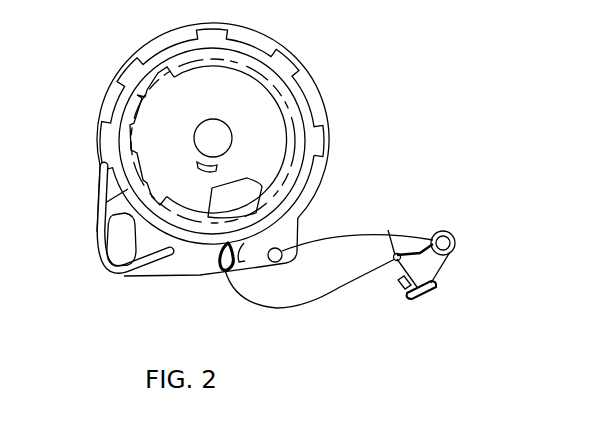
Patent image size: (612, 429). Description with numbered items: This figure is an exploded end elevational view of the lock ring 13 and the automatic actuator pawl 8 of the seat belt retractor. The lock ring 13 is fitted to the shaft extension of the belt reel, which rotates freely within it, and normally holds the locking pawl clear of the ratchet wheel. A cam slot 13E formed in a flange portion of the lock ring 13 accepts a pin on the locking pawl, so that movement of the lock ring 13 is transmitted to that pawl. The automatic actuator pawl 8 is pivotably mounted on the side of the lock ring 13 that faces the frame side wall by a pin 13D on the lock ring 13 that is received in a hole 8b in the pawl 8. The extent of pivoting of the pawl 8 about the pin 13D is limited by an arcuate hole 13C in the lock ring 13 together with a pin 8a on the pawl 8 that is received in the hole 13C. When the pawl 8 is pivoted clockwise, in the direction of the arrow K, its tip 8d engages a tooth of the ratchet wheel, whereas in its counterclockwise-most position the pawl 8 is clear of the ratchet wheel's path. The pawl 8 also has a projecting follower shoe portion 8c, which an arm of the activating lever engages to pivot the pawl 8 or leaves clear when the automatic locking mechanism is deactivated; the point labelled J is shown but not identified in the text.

The lock ring 13 is at (128, 62).
The cam slot 13E is at (116, 229).
The arcuate hole 13C is at (223, 262).
The pin 13D is at (282, 254).
The arrow indicating clockwise pivoting of the pawl K is at (245, 258).
The automatic actuator pawl 8 is at (436, 293).
The pin 8a is at (395, 260).
The hole 8b is at (455, 245).
The projecting follower shoe portion 8c is at (418, 297).
The tip 8d is at (388, 230).
The engagement point J is at (407, 302).